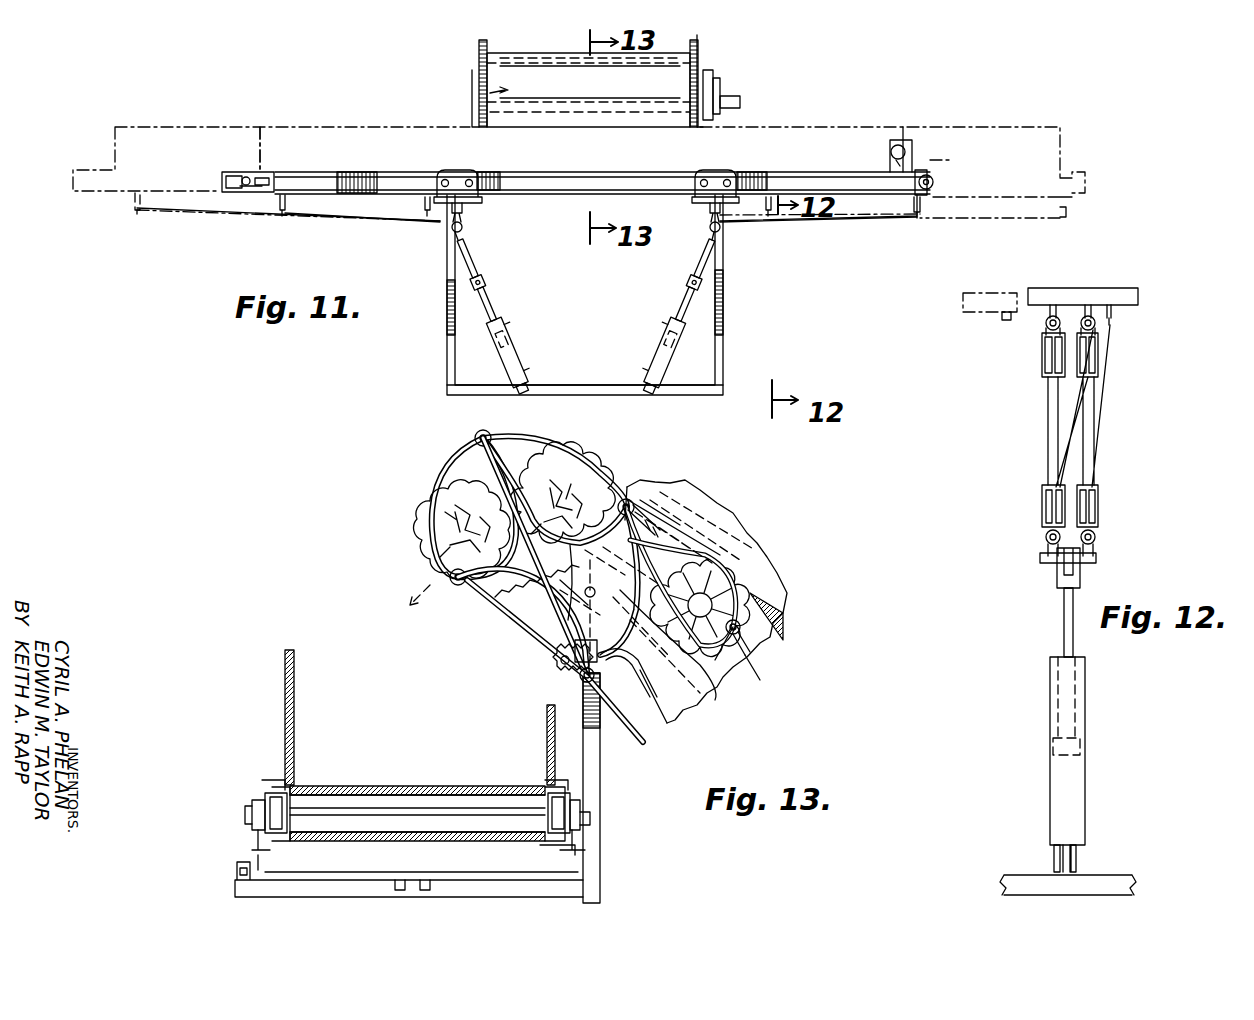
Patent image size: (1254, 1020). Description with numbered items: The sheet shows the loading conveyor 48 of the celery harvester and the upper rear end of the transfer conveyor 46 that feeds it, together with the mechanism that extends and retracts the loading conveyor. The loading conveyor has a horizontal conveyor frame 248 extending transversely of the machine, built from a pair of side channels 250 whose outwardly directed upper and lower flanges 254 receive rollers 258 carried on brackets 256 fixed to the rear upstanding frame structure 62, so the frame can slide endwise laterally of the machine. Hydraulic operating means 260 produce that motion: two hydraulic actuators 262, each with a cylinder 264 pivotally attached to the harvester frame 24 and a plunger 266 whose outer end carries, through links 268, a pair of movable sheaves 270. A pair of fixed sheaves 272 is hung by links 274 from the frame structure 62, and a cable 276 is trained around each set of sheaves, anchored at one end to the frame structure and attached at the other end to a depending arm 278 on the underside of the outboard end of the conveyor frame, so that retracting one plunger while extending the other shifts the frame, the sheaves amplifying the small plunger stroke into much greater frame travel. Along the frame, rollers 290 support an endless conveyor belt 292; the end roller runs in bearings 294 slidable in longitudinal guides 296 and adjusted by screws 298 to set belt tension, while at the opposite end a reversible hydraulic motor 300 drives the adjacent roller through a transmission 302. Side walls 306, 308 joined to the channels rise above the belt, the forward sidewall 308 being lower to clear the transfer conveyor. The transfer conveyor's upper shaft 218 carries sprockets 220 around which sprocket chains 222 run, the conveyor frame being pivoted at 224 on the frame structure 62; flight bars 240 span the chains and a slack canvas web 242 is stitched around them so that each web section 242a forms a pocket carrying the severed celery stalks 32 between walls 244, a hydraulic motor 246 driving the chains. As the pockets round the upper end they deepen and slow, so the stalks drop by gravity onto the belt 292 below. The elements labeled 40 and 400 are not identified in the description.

In FIG. 11, the harvester frame 24 is at (452, 403).
In FIG. 13, the severed celery stalks 32 is at (425, 532).
In FIG. 11, the roller 40 is at (935, 176).
In FIG. 11, the transfer conveyor 46 is at (572, 43).
In FIG. 13, the transfer conveyor 46 is at (668, 469).
In FIG. 11, the loading conveyor 48 is at (415, 95).
In FIG. 12, the loading conveyor 48 is at (1110, 276).
In FIG. 13, the loading conveyor 48 is at (417, 718).
In FIG. 11, the rear upstanding frame structure 62 is at (735, 315).
In FIG. 13, the rear upstanding frame structure 62 is at (612, 825).
In FIG. 11, the shaft 218 is at (715, 75).
In FIG. 13, the shaft 218 is at (556, 443).
In FIG. 13, the sprockets 220 is at (490, 585).
In FIG. 11, the sprocket chains 222 is at (478, 62).
In FIG. 13, the sprocket chains 222 is at (533, 612).
In FIG. 13, the pivot 224 is at (600, 665).
In FIG. 11, the flight bars 240 is at (690, 95).
In FIG. 13, the flight bars 240 is at (760, 632).
In FIG. 11, the web 242 is at (480, 100).
In FIG. 13, the web 242 is at (664, 571).
In FIG. 13, the web section 242a is at (725, 655).
In FIG. 11, the walls 244 is at (690, 60).
In FIG. 13, the walls 244 is at (752, 553).
In FIG. 11, the hydraulic motor 246 is at (735, 100).
In FIG. 11, the conveyor frame 248 is at (360, 161).
In FIG. 13, the conveyor frame 248 is at (307, 853).
In FIG. 11, the side channels 250 is at (385, 182).
In FIG. 13, the side channels 250 is at (552, 792).
In FIG. 13, the flanges 254 is at (560, 790).
In FIG. 11, the brackets 256 is at (466, 210).
In FIG. 13, the brackets 256 is at (258, 842).
In FIG. 11, the rollers 258 is at (465, 176).
In FIG. 13, the rollers 258 is at (266, 798).
In FIG. 11, the hydraulic operating means 260 is at (473, 306).
In FIG. 12, the hydraulic operating means 260 is at (1126, 691).
In FIG. 11, the hydraulic actuators 262 is at (531, 343).
In FIG. 12, the hydraulic actuators 262 is at (1043, 745).
In FIG. 12, the cylinder 264 is at (1055, 795).
In FIG. 12, the plunger 266 is at (1063, 600).
In FIG. 12, the links 268 is at (1045, 540).
In FIG. 12, the movable sheaves 270 is at (1045, 500).
In FIG. 12, the fixed sheaves 272 is at (1100, 368).
In FIG. 12, the links 274 is at (1095, 325).
In FIG. 11, the cable 276 is at (304, 228).
In FIG. 12, the cable 276 is at (1052, 347).
In FIG. 11, the depending arm 278 is at (135, 205).
In FIG. 12, the depending arm 278 is at (1003, 318).
In FIG. 13, the rollers 290 is at (348, 800).
In FIG. 13, the endless conveyor belt 292 is at (422, 786).
In FIG. 11, the bearings 294 is at (243, 190).
In FIG. 11, the longitudinal guides 296 is at (222, 176).
In FIG. 11, the screws 298 is at (270, 182).
In FIG. 11, the reversible hydraulic motor 300 is at (902, 140).
In FIG. 11, the transmission 302 is at (940, 162).
In FIG. 13, the rear side wall 306 is at (295, 692).
In FIG. 11, the forward sidewall 308 is at (800, 140).
In FIG. 13, the forward sidewall 308 is at (546, 725).
In FIG. 11, the frame line 400 is at (258, 160).